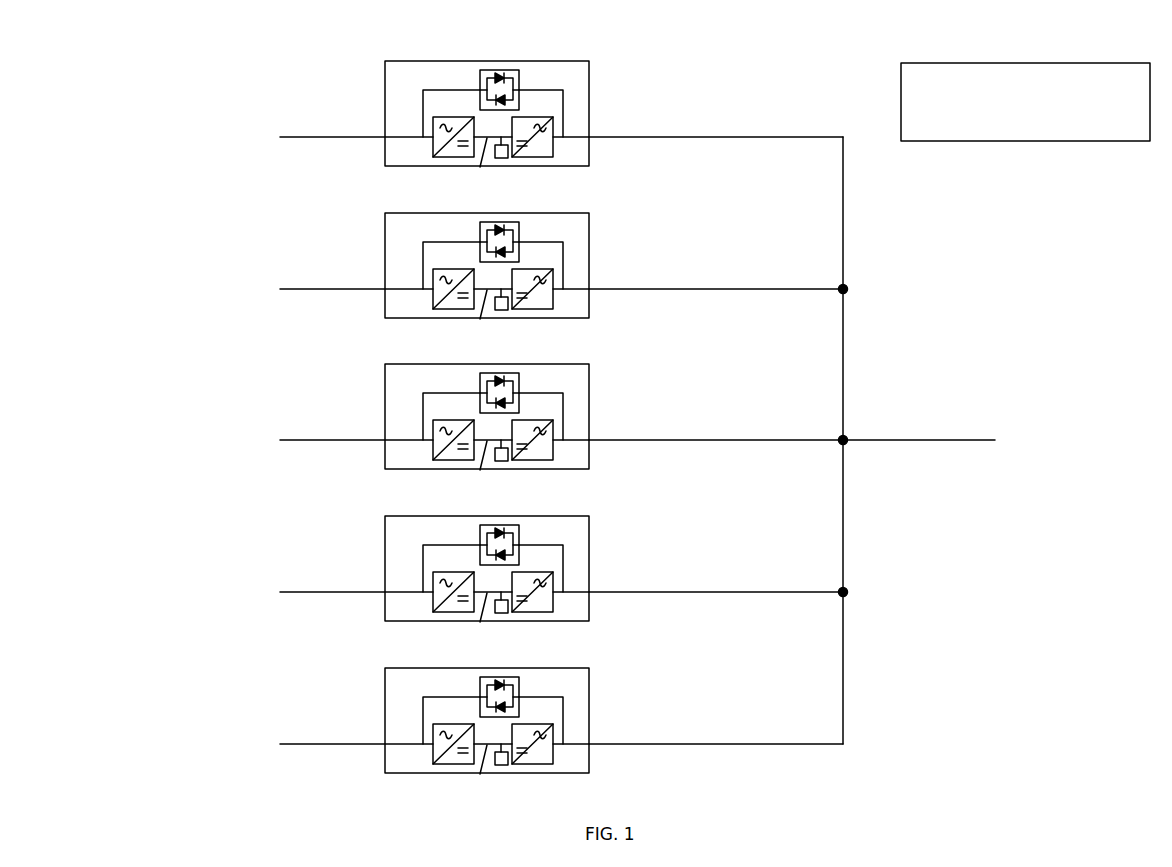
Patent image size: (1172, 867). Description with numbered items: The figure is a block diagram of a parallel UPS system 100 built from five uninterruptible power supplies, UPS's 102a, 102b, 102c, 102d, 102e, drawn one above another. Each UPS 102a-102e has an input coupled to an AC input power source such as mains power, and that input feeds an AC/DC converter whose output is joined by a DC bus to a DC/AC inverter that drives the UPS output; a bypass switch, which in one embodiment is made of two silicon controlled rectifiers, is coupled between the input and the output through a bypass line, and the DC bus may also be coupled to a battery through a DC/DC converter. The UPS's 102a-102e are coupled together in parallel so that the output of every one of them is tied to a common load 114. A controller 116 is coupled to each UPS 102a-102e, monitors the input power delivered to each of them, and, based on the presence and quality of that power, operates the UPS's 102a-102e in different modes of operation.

The parallel UPS system 100 is at (218, 78).
The UPS 102a is at (580, 68).
The UPS 102b is at (580, 220).
The UPS 102c is at (580, 371).
The UPS 102d is at (580, 523).
The UPS 102e is at (580, 675).
The load 114 is at (893, 440).
The controller 116 is at (1047, 63).